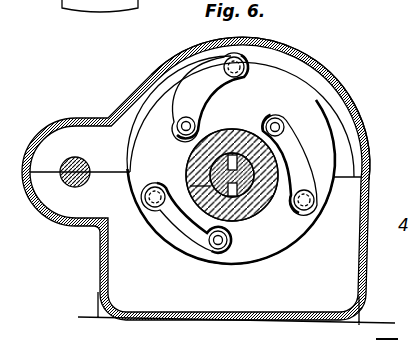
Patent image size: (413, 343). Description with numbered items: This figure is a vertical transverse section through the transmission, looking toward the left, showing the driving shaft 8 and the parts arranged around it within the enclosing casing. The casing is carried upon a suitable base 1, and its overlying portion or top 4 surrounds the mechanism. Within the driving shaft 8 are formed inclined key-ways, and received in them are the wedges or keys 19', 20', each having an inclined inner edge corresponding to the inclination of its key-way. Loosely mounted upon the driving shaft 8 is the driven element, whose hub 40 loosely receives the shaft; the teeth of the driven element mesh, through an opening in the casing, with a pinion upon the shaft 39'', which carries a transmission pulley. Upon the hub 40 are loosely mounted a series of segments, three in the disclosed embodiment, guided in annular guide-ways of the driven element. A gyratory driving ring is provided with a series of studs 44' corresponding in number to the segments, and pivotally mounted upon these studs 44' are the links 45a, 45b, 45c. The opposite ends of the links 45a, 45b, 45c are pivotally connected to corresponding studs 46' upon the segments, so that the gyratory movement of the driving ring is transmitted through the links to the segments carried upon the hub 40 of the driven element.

The base 1 is at (99, 276).
The top of casing 4 is at (157, 64).
The driving shaft 8 is at (260, 205).
The key 19' is at (230, 152).
The key 20' is at (214, 175).
The shaft 39'' is at (77, 159).
The hub 40 is at (251, 142).
The stud 44' is at (230, 152).
The link 45a is at (217, 98).
The link 45b is at (304, 145).
The link 45c is at (175, 237).
The stud 46' is at (227, 171).